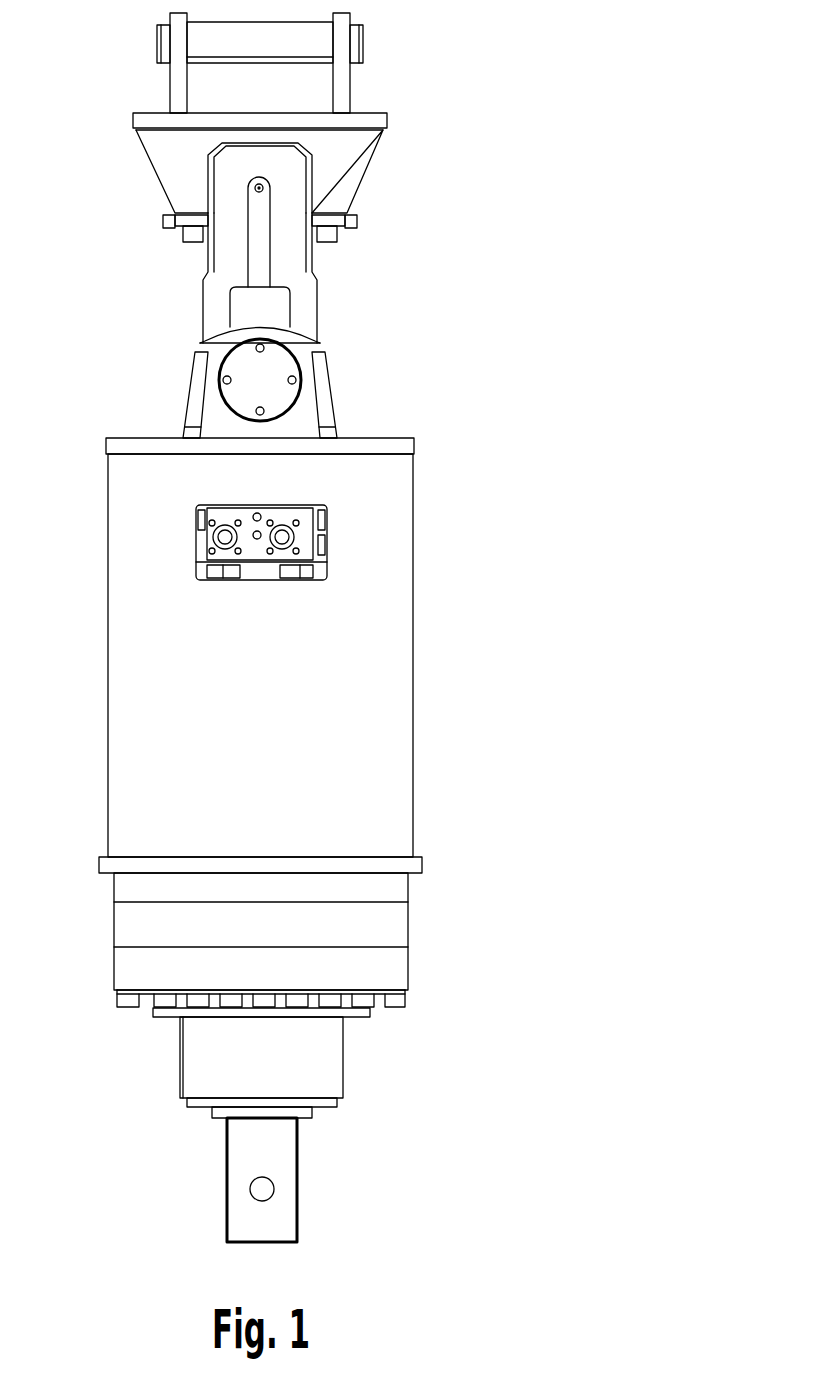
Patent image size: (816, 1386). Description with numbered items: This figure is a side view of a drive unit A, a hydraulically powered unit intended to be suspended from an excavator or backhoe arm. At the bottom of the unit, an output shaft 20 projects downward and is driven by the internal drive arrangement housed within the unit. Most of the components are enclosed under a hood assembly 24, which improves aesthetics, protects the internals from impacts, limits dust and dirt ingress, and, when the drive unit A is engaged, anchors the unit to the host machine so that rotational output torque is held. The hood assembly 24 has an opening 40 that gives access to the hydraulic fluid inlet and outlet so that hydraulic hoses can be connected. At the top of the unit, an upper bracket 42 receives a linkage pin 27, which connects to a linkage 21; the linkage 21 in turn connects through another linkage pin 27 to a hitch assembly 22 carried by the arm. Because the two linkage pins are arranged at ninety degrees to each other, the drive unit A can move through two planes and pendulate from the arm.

The hitch assembly 22 is at (373, 152).
The linkage 21 is at (310, 306).
The linkage pin 27 is at (243, 393).
The upper bracket 42 is at (337, 393).
The hood assembly 24 is at (390, 740).
The opening 40 is at (327, 557).
The output shaft 20 is at (282, 1159).
The drive unit A is at (577, 653).